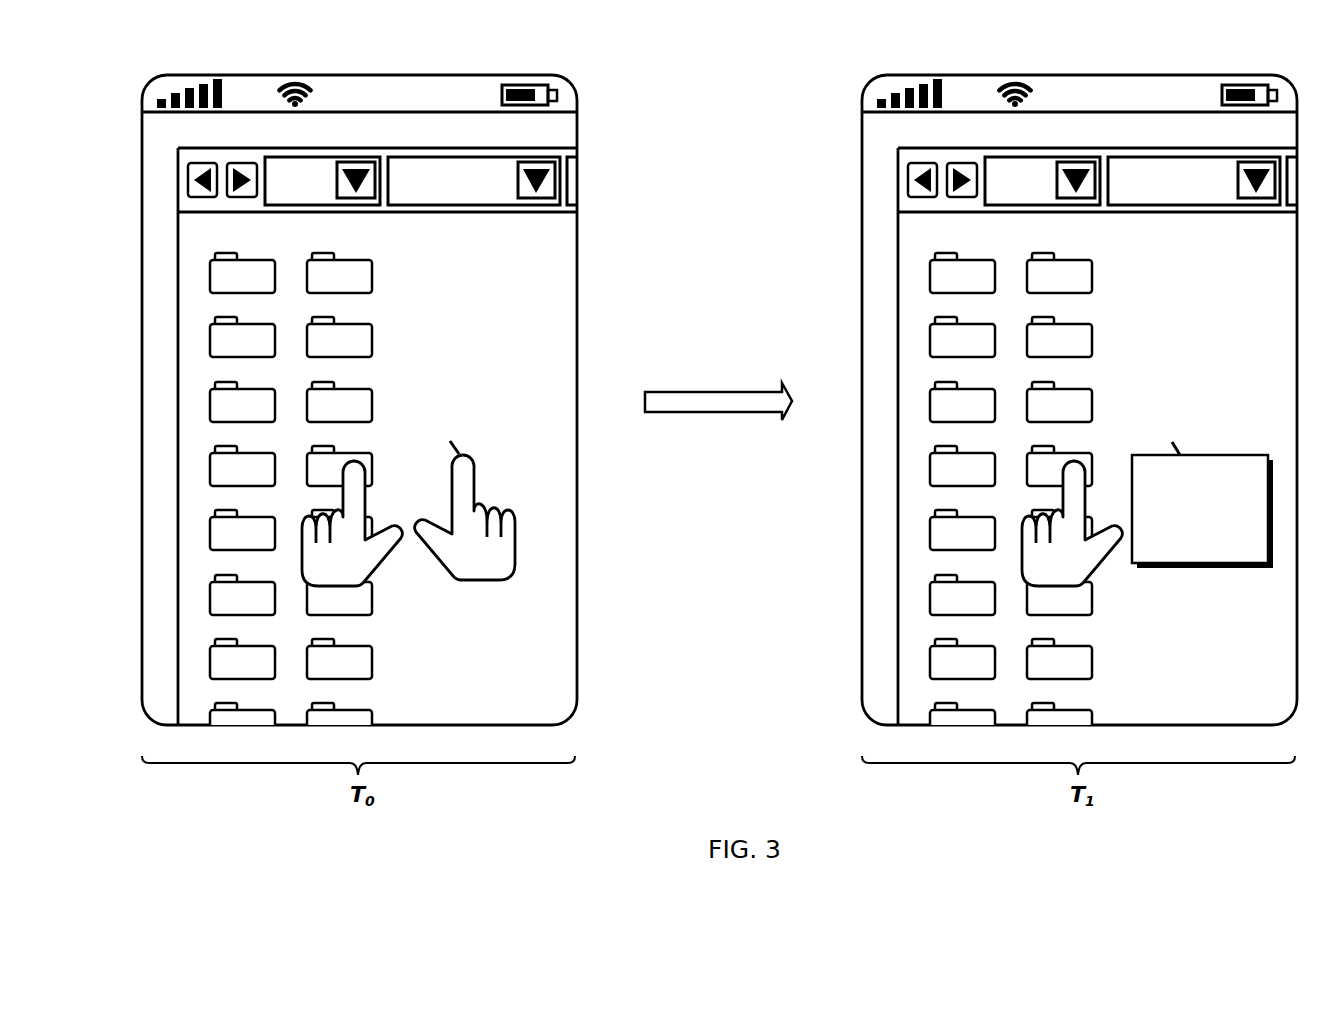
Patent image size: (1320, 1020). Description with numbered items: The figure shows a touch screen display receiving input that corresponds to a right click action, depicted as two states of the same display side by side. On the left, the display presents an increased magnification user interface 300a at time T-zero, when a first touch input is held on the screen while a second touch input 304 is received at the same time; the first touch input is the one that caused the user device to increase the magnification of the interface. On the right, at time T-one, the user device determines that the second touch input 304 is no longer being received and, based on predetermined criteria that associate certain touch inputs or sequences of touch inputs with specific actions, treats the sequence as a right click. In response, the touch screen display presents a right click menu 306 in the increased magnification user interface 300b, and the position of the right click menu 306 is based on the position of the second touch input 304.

The user interface 300a is at (212, 75).
The increased magnification user interface 300b is at (932, 75).
The second touch input 304 is at (504, 577).
The right click menu 306 is at (1237, 455).